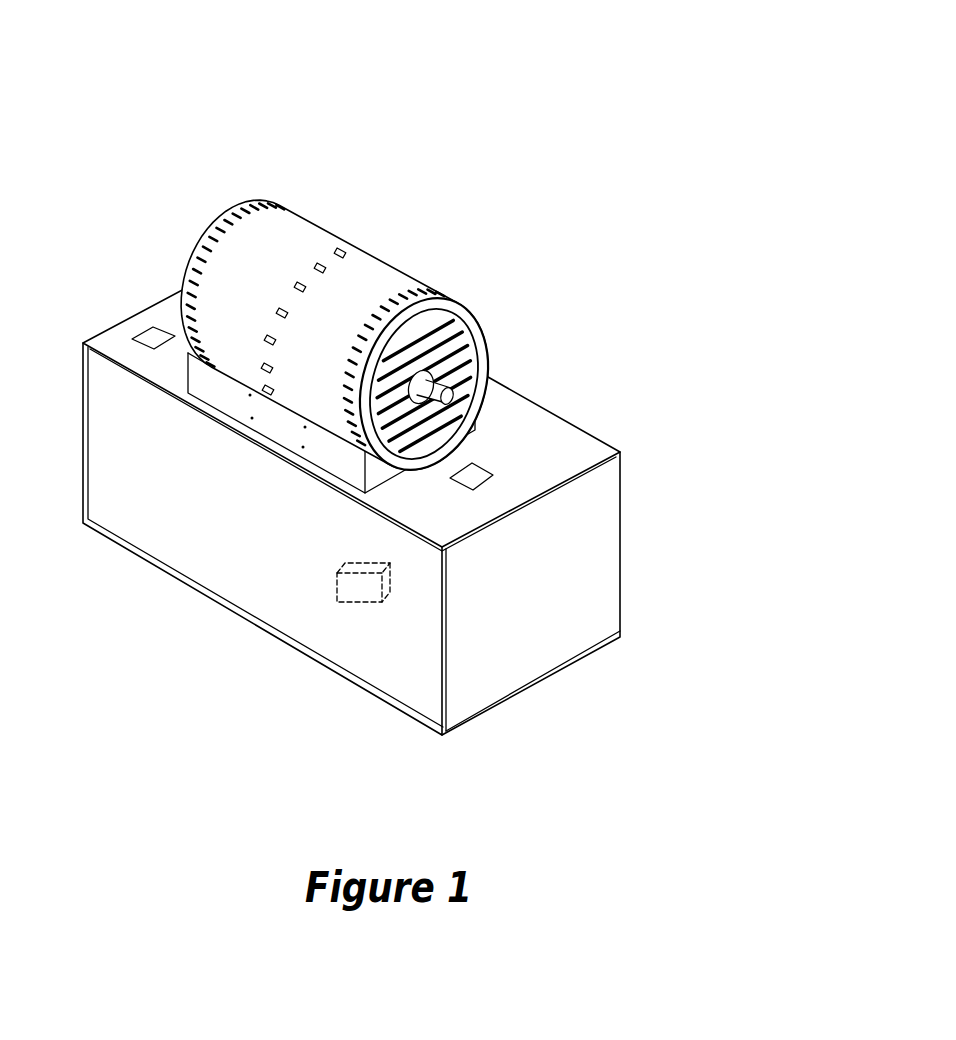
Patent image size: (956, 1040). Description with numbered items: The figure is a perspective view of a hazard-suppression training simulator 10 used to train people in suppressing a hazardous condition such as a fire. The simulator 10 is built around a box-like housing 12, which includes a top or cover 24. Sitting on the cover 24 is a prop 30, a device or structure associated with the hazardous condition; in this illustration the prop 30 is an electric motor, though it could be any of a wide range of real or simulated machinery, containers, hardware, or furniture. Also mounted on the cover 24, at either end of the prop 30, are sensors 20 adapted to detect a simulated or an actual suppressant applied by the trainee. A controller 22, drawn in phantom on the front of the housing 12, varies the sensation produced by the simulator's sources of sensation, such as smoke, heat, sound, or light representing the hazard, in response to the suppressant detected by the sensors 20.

The hazard-suppression training simulator 10 is at (387, 382).
The housing 12 is at (393, 491).
The sensor 20 is at (163, 330).
The controller 22 is at (345, 605).
The top or cover 24 is at (538, 453).
The prop 30 is at (323, 242).